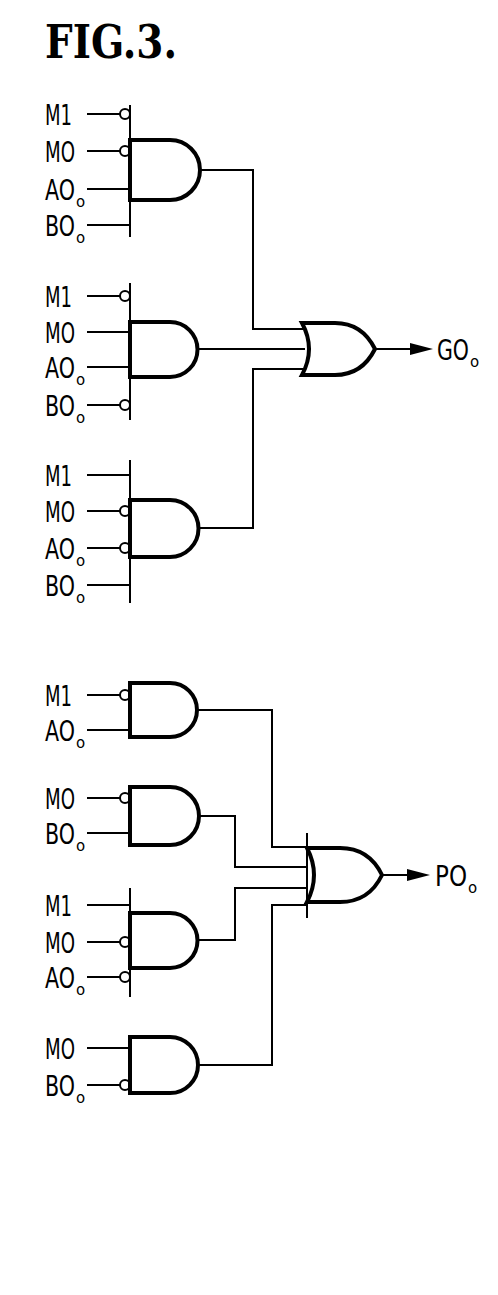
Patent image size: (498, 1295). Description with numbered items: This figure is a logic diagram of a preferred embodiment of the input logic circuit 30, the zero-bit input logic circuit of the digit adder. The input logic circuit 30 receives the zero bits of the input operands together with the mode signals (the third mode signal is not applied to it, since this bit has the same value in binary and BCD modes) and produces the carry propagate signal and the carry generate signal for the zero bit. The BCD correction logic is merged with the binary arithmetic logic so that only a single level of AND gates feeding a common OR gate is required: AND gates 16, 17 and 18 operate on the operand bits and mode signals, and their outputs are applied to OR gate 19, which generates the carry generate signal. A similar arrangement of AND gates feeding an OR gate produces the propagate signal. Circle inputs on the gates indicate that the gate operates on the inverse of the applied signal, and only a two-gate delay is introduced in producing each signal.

The AND gate 16 is at (168, 186).
The AND gate 17 is at (169, 366).
The AND gate 18 is at (166, 546).
The OR gate 19 is at (336, 363).
The input logic circuit 30 is at (302, 486).